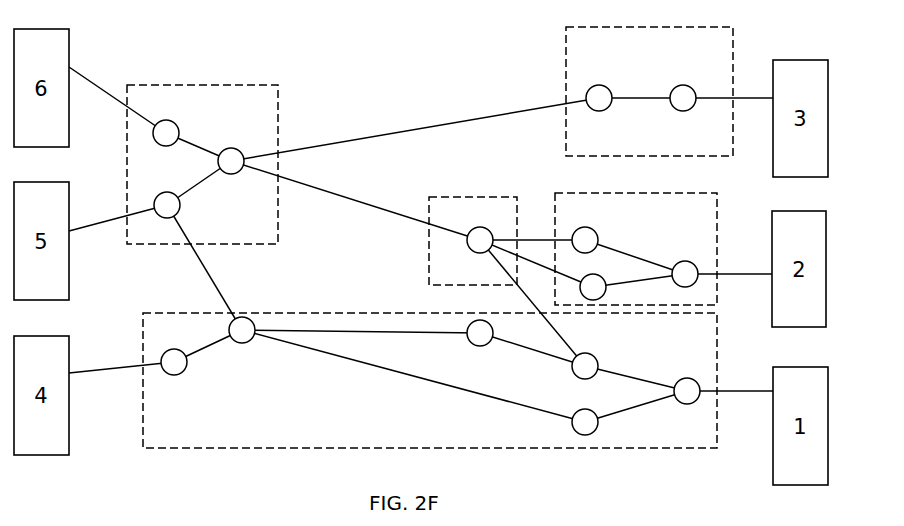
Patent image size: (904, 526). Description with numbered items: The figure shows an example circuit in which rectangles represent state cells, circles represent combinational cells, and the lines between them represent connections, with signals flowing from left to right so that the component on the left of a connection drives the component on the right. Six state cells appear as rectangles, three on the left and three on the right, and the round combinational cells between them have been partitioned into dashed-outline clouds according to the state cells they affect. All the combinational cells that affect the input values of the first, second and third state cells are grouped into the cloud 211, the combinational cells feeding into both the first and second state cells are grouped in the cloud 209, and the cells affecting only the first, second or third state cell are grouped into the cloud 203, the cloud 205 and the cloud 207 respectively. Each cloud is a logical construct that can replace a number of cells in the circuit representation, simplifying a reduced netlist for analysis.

The cloud 203 is at (133, 420).
The cloud 205 is at (727, 224).
The cloud 207 is at (555, 67).
The cloud 209 is at (425, 210).
The cloud 211 is at (282, 112).